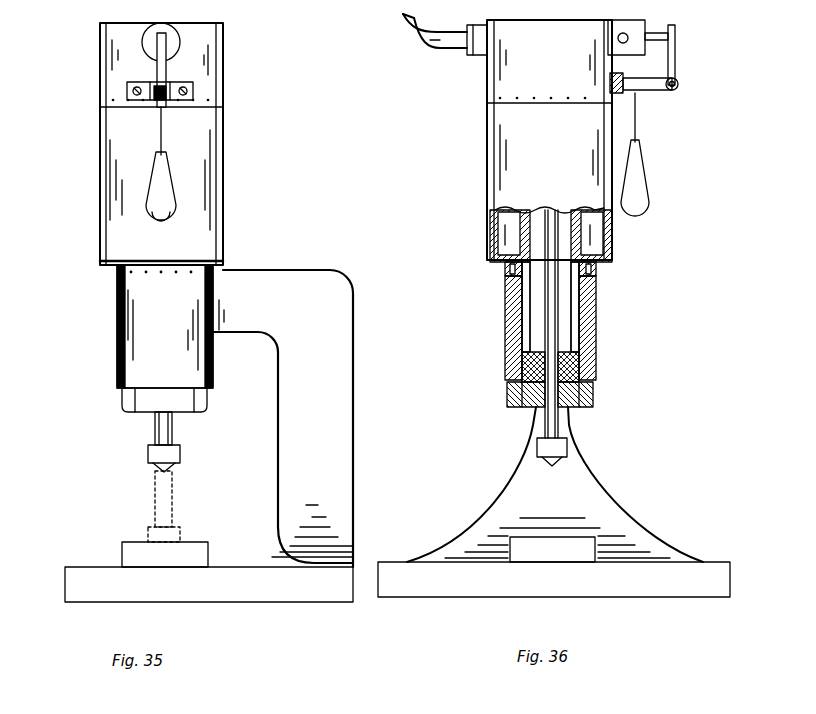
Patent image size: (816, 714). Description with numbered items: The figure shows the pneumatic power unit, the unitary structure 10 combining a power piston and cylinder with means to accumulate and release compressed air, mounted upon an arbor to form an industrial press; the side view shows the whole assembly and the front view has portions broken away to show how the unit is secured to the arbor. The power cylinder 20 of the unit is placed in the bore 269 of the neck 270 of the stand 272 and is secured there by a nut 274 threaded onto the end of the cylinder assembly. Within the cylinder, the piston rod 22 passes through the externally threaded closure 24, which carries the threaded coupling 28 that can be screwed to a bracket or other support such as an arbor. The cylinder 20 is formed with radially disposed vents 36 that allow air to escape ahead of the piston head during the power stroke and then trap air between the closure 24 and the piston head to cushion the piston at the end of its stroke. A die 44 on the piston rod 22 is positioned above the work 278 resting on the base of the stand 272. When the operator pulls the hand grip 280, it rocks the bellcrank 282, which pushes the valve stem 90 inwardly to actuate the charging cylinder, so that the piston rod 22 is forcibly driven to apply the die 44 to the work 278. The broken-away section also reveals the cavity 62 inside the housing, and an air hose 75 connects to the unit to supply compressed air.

In FIG. 35, the unitary structure 10 is at (92, 194).
In FIG. 36, the unitary structure 10 is at (463, 192).
In FIG. 36, the power cylinder 20 is at (598, 316).
In FIG. 35, the piston rod 22 is at (176, 429).
In FIG. 36, the piston rod 22 is at (545, 297).
In FIG. 36, the closure 24 is at (525, 360).
In FIG. 36, the coupling 28 is at (530, 393).
In FIG. 35, the vents 36 is at (138, 271).
In FIG. 36, the vents 36 is at (510, 274).
In FIG. 35, the die 44 is at (152, 454).
In FIG. 36, the die 44 is at (540, 445).
In FIG. 36, the cylinder cavity 62 is at (505, 233).
In FIG. 36, the air hose 75 is at (438, 47).
In FIG. 36, the valve stem 90 is at (680, 40).
In FIG. 36, the bore 269 is at (598, 280).
In FIG. 35, the neck 270 is at (138, 326).
In FIG. 36, the neck 270 is at (598, 296).
In FIG. 35, the stand 272 is at (338, 355).
In FIG. 36, the stand 272 is at (588, 470).
In FIG. 35, the nut 274 is at (133, 402).
In FIG. 36, the nut 274 is at (593, 390).
In FIG. 35, the work 278 is at (138, 555).
In FIG. 36, the work 278 is at (580, 545).
In FIG. 35, the hand grip 280 is at (173, 190).
In FIG. 36, the hand grip 280 is at (650, 187).
In FIG. 35, the bellcrank 282 is at (168, 71).
In FIG. 36, the bellcrank 282 is at (677, 60).